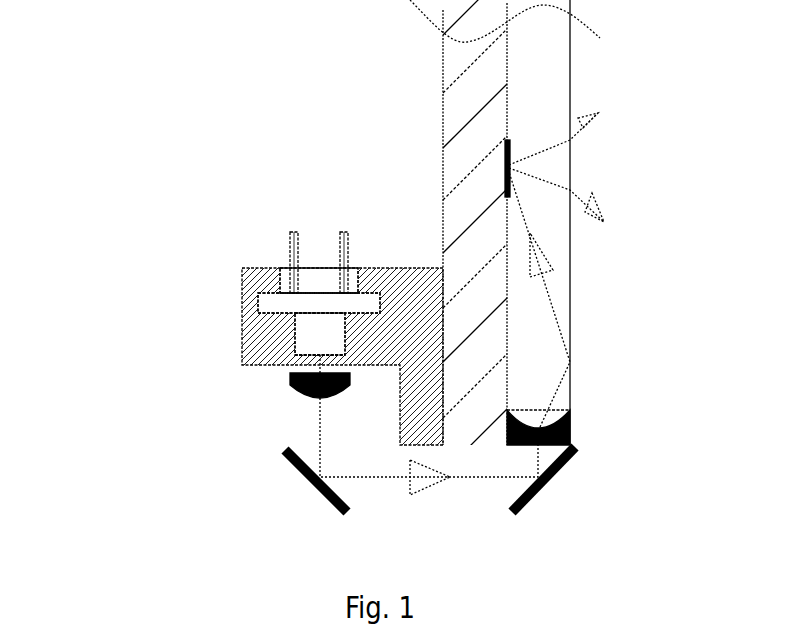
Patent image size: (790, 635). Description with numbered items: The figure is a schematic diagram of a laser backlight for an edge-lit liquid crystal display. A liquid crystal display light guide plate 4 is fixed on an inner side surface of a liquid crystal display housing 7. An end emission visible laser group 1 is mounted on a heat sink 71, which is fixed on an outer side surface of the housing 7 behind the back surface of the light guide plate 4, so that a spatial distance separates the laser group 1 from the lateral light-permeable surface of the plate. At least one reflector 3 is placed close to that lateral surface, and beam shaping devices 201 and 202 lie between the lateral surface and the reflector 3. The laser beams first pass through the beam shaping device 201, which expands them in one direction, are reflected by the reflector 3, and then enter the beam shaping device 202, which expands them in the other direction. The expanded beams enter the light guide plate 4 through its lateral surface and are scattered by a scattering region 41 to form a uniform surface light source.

The end emission visible laser group 1 is at (282, 352).
The reflector 3 is at (333, 504).
The liquid crystal display light guide plate 4 is at (557, 75).
The scattering region 41 is at (507, 192).
The liquid crystal display housing 7 is at (445, 122).
The end emission visible laser heat sink 71 is at (250, 297).
The aspherical laser collimating lens 201 is at (292, 383).
The beam expanding concave surface cylindrical lens 202 is at (572, 440).